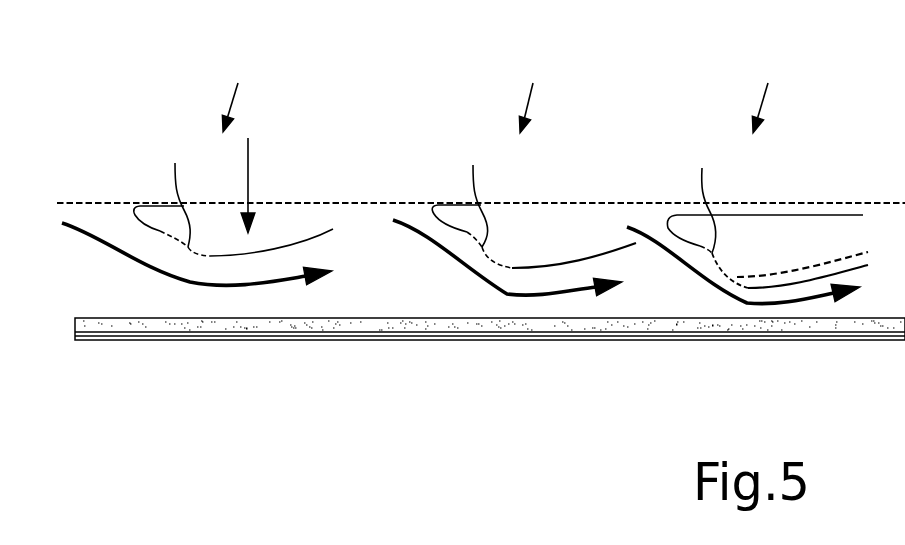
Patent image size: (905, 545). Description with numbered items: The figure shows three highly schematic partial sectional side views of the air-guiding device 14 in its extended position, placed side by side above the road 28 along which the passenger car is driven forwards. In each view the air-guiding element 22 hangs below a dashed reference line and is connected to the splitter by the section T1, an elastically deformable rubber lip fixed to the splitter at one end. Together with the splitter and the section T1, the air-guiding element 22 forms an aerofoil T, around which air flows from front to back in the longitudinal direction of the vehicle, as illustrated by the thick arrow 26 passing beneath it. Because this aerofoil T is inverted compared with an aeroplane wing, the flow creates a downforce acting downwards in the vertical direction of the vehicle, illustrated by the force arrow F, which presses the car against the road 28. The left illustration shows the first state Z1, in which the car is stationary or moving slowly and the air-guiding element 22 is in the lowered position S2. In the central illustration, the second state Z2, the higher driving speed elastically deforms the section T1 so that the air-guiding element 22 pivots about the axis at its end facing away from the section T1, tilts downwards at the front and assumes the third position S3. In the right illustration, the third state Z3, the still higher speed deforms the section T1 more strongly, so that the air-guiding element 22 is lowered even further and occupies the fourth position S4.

The air-guiding device 14 is at (127, 236).
The air-guiding element 22 is at (528, 329).
The arrow 26 is at (145, 267).
The road 28 is at (460, 318).
The aerofoil T is at (272, 253).
The section T1 is at (439, 193).
The force arrow F is at (248, 175).
The first state Z1 is at (238, 93).
The second state Z2 is at (533, 92).
The third state Z3 is at (766, 92).
The lowered position S2 is at (230, 270).
The third position S3 is at (543, 284).
The fourth position S4 is at (803, 296).